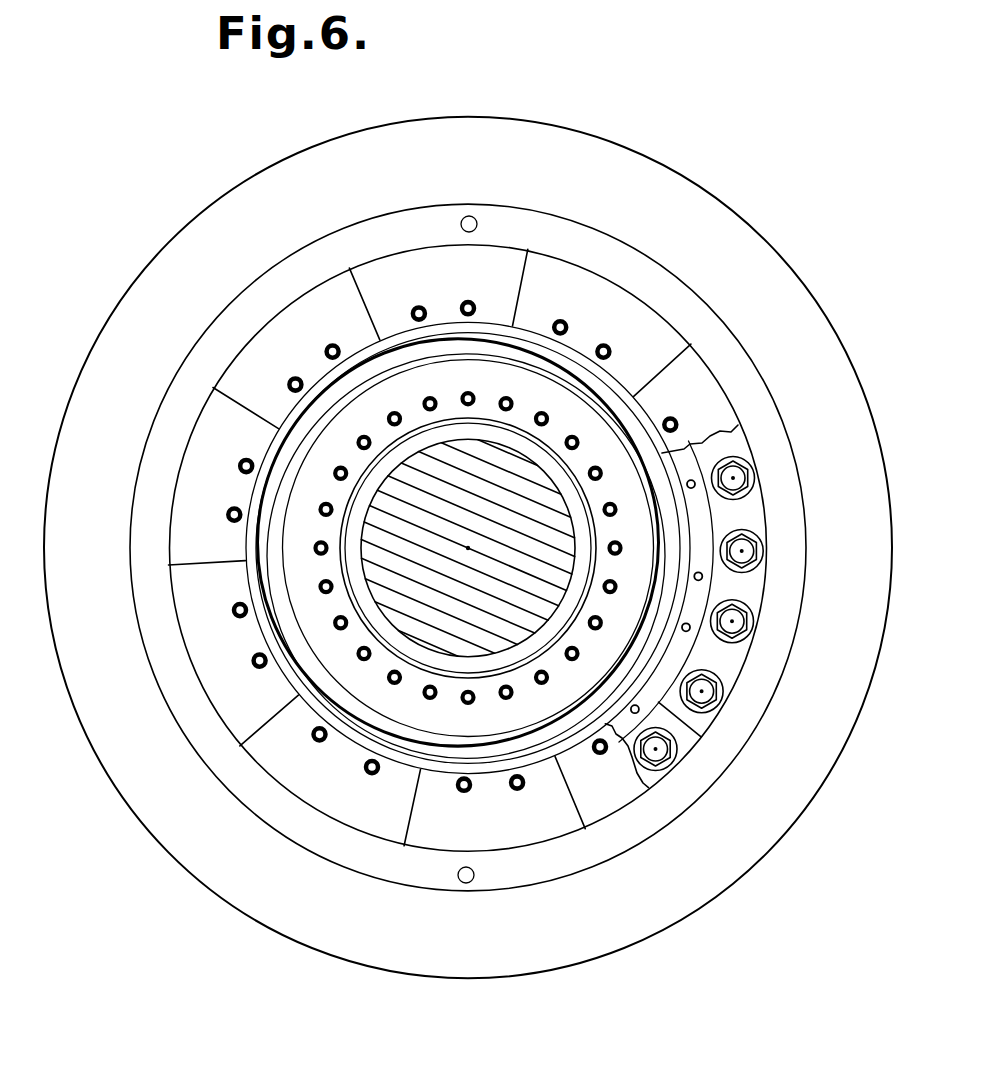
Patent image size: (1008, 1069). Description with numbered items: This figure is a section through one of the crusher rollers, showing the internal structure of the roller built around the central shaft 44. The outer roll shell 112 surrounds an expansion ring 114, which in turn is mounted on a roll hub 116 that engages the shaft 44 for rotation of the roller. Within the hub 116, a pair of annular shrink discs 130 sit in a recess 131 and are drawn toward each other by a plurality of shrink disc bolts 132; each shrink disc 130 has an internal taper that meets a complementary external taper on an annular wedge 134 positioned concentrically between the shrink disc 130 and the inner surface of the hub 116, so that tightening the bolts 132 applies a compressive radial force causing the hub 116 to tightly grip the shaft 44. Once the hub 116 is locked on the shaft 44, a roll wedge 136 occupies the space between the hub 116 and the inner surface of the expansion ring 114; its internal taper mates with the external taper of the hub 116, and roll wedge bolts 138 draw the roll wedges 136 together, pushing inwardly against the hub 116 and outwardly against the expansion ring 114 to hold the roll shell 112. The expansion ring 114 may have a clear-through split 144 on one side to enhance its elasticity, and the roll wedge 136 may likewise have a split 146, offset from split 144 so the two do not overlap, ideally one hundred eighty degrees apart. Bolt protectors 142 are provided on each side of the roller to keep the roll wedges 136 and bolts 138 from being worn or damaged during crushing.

The shaft 44 is at (456, 603).
The roll shell 112 is at (628, 164).
The expansion ring 114 is at (693, 313).
The roll hub 116 is at (387, 627).
The shrink disc 130 is at (480, 722).
The recess 131 is at (263, 490).
The shrink disc bolt 132 is at (360, 438).
The annular wedge 134 is at (340, 596).
The roll wedge 136 is at (750, 591).
The roll wedge bolt 138 is at (717, 688).
The bolt protector 142 is at (185, 538).
The split 144 is at (822, 551).
The split 146 is at (688, 740).